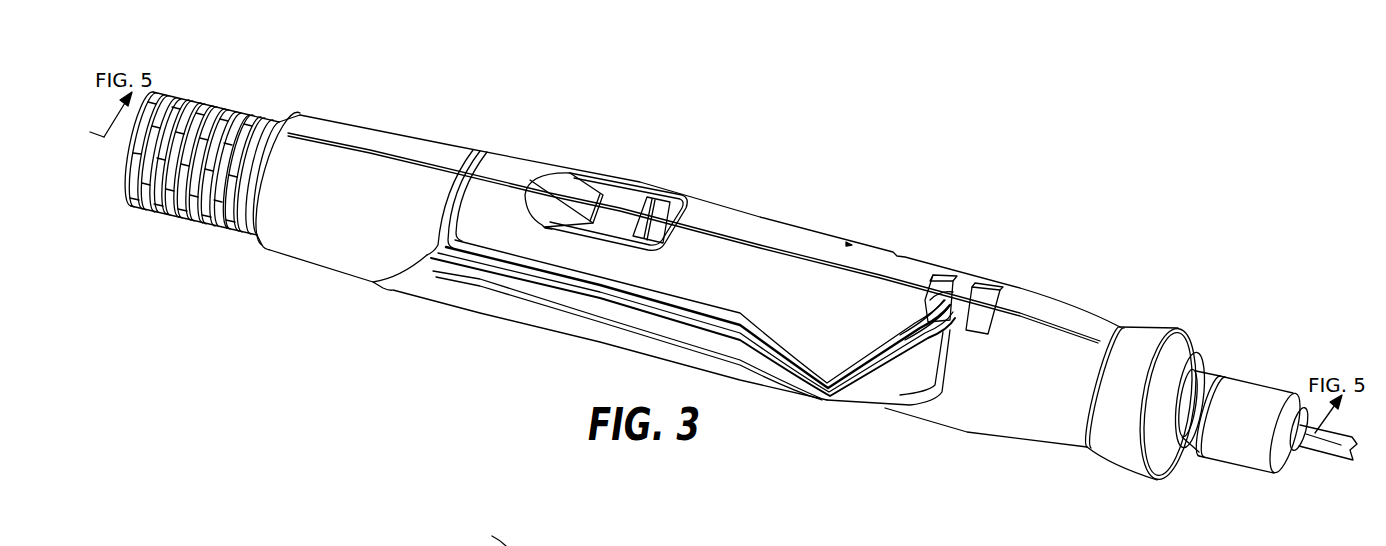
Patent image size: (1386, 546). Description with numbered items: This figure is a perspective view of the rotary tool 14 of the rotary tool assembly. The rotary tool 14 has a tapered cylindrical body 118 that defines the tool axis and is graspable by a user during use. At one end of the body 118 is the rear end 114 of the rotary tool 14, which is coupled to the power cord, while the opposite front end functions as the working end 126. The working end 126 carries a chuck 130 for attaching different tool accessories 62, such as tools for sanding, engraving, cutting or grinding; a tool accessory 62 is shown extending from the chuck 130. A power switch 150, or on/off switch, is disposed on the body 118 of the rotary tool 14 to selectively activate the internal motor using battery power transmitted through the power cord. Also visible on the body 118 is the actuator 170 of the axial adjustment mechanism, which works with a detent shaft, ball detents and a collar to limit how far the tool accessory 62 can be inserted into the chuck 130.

The rotary tool 14 is at (749, 127).
The tool accessory 62 is at (1327, 460).
The rear end 114 is at (262, 87).
The tapered cylindrical body 118 is at (423, 148).
The working end 126 is at (1262, 333).
The chuck 130 is at (1243, 457).
The power switch 150 is at (655, 207).
The actuator 170 is at (989, 287).